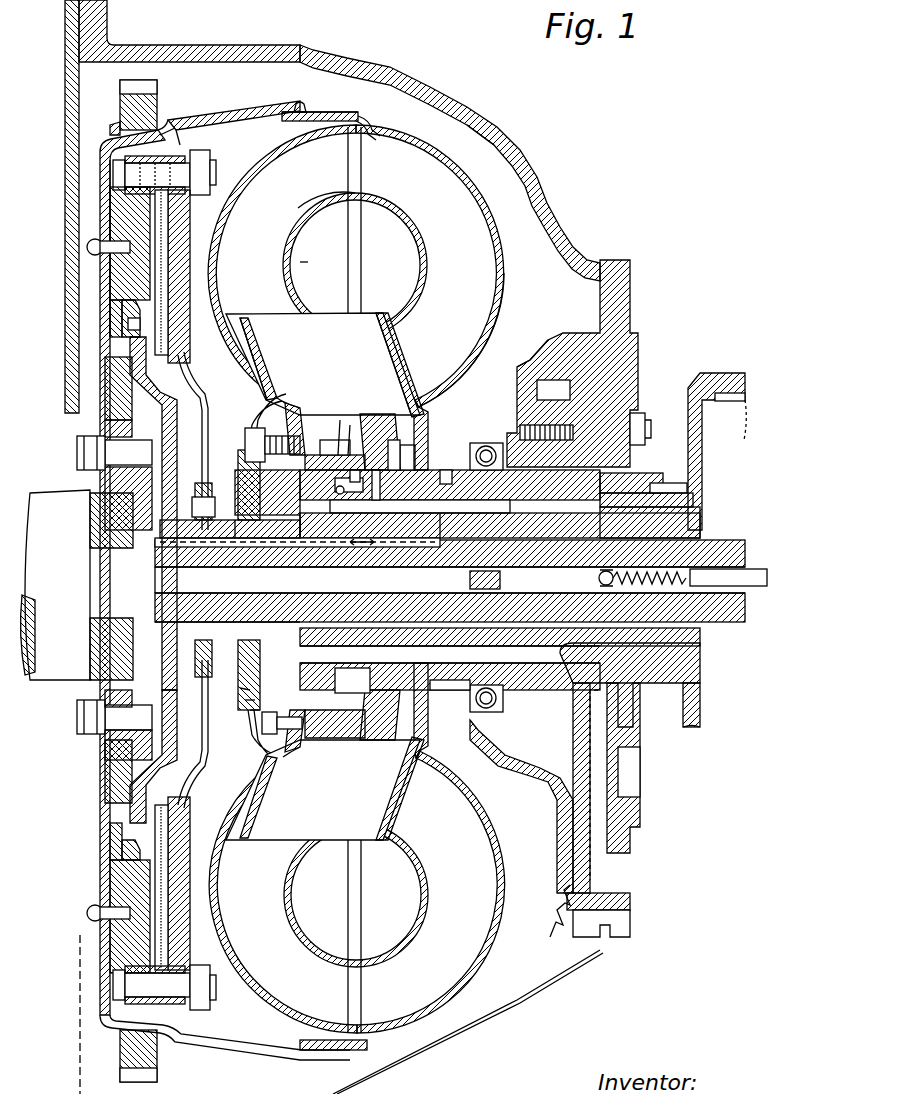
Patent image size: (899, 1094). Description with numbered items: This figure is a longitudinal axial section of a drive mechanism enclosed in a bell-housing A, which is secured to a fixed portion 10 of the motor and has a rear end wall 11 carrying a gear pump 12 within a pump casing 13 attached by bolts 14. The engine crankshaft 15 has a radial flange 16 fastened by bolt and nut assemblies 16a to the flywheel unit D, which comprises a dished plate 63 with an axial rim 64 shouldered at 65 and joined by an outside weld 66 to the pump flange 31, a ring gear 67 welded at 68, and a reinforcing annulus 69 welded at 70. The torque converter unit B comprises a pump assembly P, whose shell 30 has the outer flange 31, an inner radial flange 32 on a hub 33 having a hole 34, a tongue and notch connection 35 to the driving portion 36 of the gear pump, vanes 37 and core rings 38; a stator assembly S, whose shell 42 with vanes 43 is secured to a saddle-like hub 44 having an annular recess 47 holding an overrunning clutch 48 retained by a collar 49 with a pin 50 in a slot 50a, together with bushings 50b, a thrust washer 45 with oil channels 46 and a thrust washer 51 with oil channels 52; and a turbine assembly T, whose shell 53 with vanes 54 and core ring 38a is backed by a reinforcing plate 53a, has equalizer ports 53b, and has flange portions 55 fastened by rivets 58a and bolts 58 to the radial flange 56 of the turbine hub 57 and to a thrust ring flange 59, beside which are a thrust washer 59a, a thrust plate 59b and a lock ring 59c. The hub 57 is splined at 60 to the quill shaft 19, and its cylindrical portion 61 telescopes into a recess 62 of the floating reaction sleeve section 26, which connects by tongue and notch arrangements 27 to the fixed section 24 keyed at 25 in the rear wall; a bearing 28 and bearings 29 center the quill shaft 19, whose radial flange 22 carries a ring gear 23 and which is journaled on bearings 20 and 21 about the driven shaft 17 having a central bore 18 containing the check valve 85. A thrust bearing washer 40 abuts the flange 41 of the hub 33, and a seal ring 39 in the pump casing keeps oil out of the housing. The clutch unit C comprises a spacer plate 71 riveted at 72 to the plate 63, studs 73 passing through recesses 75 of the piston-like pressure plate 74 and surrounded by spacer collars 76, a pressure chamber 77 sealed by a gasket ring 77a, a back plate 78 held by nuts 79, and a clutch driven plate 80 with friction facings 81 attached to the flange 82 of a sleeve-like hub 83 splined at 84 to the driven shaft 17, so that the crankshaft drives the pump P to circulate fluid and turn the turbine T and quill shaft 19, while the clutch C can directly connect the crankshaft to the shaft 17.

The fixed portion 10 is at (65, 100).
The rear end wall 11 is at (630, 297).
The gear pump 12 is at (552, 380).
The pump casing 13 is at (528, 368).
The bolts 14 is at (648, 415).
The engine crankshaft 15 is at (36, 495).
The radial flange 16 is at (105, 432).
The bolt and nut assemblies 16a is at (75, 452).
The driven transmission shaft 17 is at (740, 540).
The central bore 18 is at (419, 591).
The quill shaft 19 is at (457, 525).
The bushings or bearings 20 is at (297, 564).
The bushings or bearings 21 is at (692, 527).
The radial flange 22 is at (700, 452).
The ring gear 23 is at (745, 397).
The fixed rear section 24 is at (668, 495).
The key 25 is at (648, 478).
The floating section 26 is at (367, 563).
The tongue and notch arrangements 27 is at (450, 692).
The bearing 28 is at (672, 505).
The bushings or bearings 29 is at (400, 628).
The pump shell 30 is at (487, 196).
The outer axially extending flange 31 is at (345, 115).
The inner radial flange 32 is at (432, 420).
The pump hub 33 is at (440, 476).
The hole 34 is at (423, 443).
The tongue and notch connection 35 is at (497, 440).
The driving portion 36 is at (546, 446).
The pump vanes 37 is at (495, 285).
The core rings 38 is at (408, 212).
The turbine core ring 38a is at (317, 251).
The seal ring 39 is at (480, 712).
The thrust bearing washer 40 is at (420, 505).
The radially inwardly extending flange 41 is at (378, 505).
The stator shell 42 is at (292, 412).
The stator vanes 43 is at (388, 298).
The stator hub 44 is at (365, 420).
The thrust washer 45 is at (385, 440).
The oil channels 46 is at (388, 740).
The annular recess 47 is at (367, 756).
The overrunning clutch 48 is at (340, 740).
The cover or collar 49 is at (329, 736).
The pin 50 is at (313, 460).
The slot 50a is at (339, 423).
The bushings 50b is at (350, 428).
The thrust washer 51 is at (305, 738).
The radial oil channels 52 is at (297, 768).
The turbine shell 53 is at (300, 128).
The reinforcing plate 53a is at (268, 318).
The equalizer ports 53b is at (270, 392).
The turbine vanes 54 is at (305, 203).
The flange portions 55 is at (290, 402).
The radial flange 56 is at (248, 420).
The turbine hub 57 is at (245, 480).
The bolts 58 is at (245, 443).
The rivets 58a is at (260, 724).
The thrust ring flange 59 is at (283, 871).
The thrust washer 59a is at (240, 711).
The thrust plate 59b is at (231, 701).
The lock ring 59c is at (240, 688).
The splines 60 is at (254, 558).
The cylindrical portion 61 is at (300, 549).
The recess 62 is at (259, 504).
The dished plate 63 is at (107, 278).
The axial flange or rim 64 is at (262, 104).
The shoulder 65 is at (298, 100).
The outside weld 66 is at (310, 112).
The ring gear 67 is at (120, 82).
The weld 68 is at (112, 126).
The reinforcing annulus 69 is at (108, 393).
The weld 70 is at (110, 372).
The spacer plate 71 is at (120, 220).
The rivets 72 is at (92, 247).
The headed studs 73 is at (125, 172).
The pressure plate 74 is at (140, 330).
The recesses 75 is at (165, 124).
The spacer collars 76 is at (185, 135).
The pressure chamber 77 is at (110, 322).
The gasket ring 77a is at (118, 850).
The clutch back plate 78 is at (200, 215).
The nuts 79 is at (210, 152).
The clutch driven plate 80 is at (188, 372).
The friction facings 81 is at (165, 240).
The radially extending flange 82 is at (205, 483).
The sleeve-like hub 83 is at (227, 595).
The splines 84 is at (197, 585).
The check valve 85 is at (618, 579).
The bell-housing A is at (542, 151).
The torque converter unit B is at (446, 144).
The clutch unit C is at (201, 135).
The flywheel unit D is at (84, 151).
The turbine assembly T is at (264, 252).
The pump assembly P is at (464, 257).
The stator assembly S is at (344, 350).